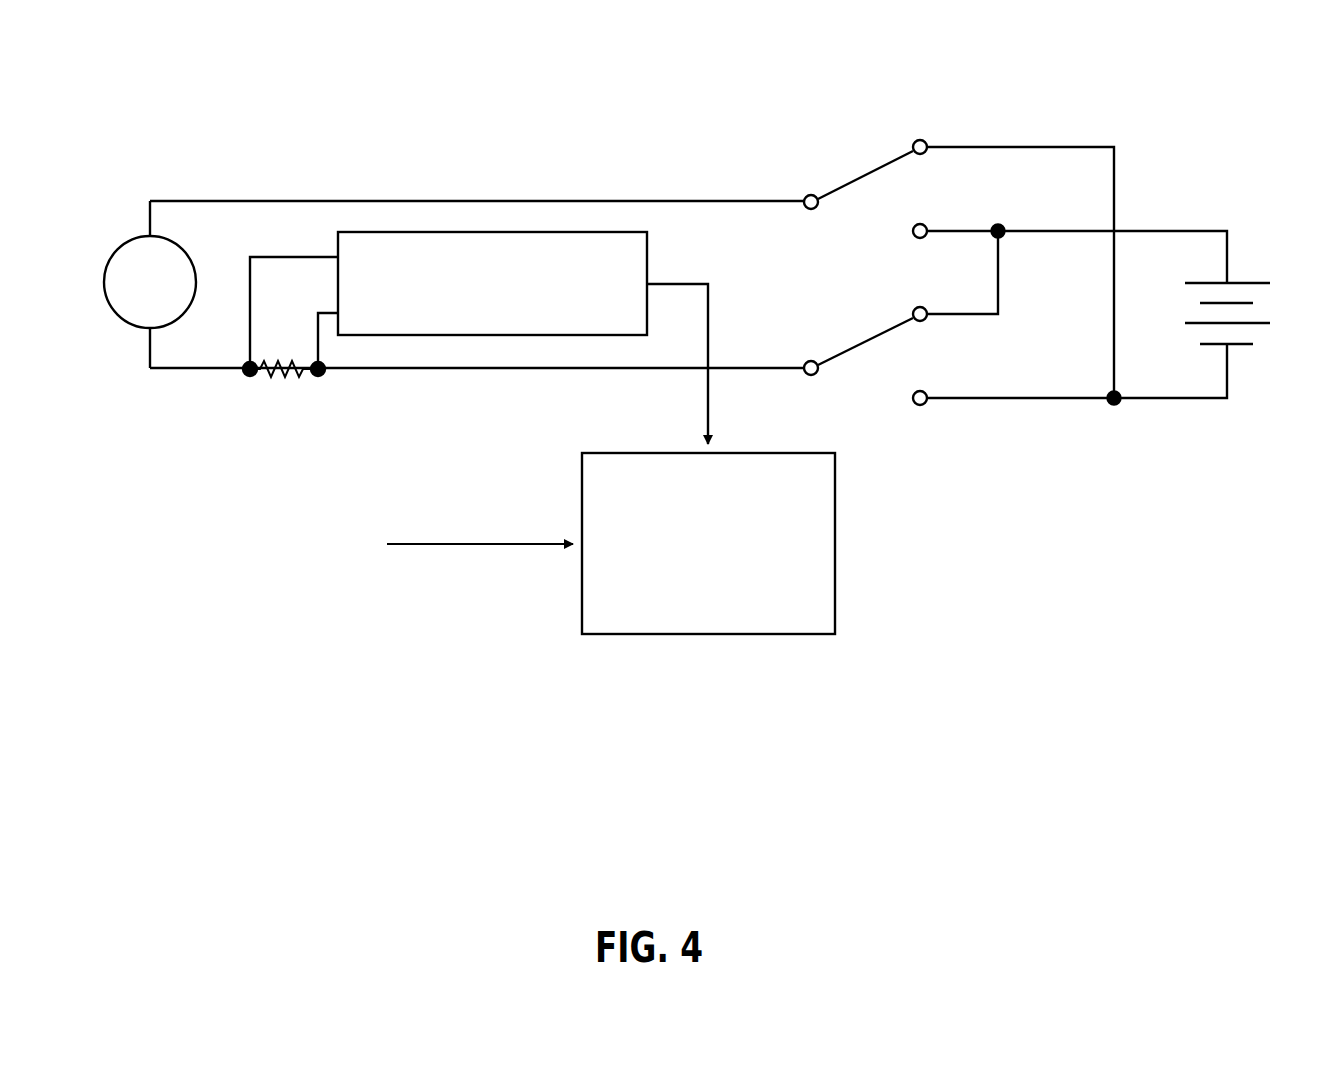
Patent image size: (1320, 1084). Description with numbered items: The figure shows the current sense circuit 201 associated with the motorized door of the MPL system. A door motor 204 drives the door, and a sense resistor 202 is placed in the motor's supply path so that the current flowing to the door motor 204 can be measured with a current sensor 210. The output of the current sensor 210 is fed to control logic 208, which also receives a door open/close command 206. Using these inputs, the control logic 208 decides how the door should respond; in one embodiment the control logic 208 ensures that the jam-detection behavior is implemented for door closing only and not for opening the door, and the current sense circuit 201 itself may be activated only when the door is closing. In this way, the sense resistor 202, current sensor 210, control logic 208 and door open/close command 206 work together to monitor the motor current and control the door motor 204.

The current sense circuit 201 is at (1222, 84).
The resistor R1 202 is at (305, 405).
The door motor M1 204 is at (140, 237).
The door open/close command 206 is at (287, 603).
The control logic 208 is at (835, 634).
The current sensor 210 is at (492, 232).